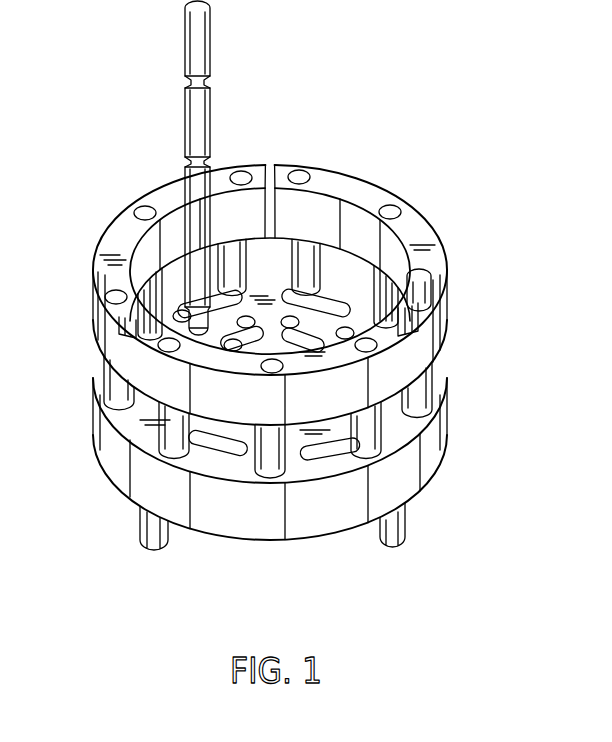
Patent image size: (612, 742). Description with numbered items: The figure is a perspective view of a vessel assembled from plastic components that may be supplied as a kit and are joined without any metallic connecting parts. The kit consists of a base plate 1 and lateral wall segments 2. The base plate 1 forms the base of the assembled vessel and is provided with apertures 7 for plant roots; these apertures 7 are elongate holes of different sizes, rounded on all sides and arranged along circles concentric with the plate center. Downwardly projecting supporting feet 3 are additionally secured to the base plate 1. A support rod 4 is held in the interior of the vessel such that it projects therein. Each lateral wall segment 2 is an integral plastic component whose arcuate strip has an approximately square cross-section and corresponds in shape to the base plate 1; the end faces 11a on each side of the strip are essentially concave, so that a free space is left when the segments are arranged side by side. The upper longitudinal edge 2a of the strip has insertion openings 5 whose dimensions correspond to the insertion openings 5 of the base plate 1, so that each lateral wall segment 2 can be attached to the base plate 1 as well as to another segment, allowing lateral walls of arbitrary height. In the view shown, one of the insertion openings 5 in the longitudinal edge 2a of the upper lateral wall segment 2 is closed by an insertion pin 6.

The base plate 1 is at (236, 333).
The lateral wall segment 2 is at (160, 372).
The upper longitudinal edge 2a is at (429, 247).
The supporting feet 3 is at (396, 520).
The support rod 4 is at (199, 62).
The insertion openings 5 is at (108, 294).
The insertion pin 6 is at (428, 283).
The apertures 7 is at (227, 446).
The end faces 11a is at (420, 308).